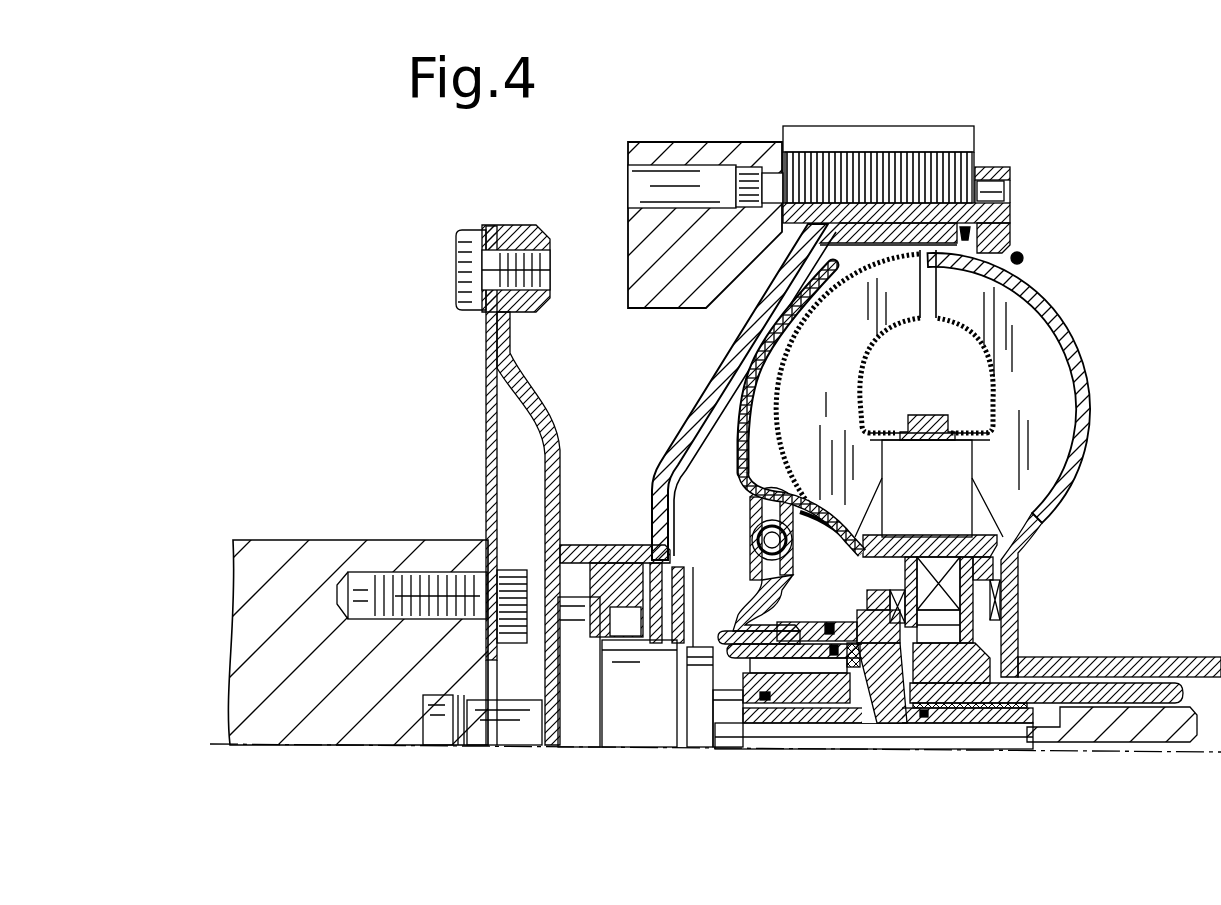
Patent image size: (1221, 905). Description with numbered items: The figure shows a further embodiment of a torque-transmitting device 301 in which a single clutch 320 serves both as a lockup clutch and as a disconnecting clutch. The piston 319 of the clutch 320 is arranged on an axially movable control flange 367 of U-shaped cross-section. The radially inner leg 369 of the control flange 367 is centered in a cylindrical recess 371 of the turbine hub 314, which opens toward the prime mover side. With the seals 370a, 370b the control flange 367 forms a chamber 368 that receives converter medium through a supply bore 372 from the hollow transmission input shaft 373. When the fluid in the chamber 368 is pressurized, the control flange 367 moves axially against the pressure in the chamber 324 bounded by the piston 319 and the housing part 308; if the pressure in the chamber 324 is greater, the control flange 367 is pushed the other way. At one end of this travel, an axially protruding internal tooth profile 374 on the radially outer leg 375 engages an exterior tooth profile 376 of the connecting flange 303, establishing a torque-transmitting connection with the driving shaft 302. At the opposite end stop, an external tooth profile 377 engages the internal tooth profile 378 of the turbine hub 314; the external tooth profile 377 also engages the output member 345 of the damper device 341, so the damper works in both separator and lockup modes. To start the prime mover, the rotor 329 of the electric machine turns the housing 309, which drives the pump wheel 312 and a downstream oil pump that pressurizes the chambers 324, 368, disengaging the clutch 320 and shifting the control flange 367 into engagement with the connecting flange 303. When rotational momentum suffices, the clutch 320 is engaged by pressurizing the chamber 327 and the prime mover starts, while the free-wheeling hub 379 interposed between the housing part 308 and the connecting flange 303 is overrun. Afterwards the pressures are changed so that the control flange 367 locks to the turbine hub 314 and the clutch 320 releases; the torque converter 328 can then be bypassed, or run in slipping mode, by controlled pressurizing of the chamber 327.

The torque-transmitting device 301 is at (1100, 110).
The driving shaft 302 is at (285, 745).
The connecting flange 303 is at (632, 696).
The housing part 308 is at (692, 408).
The housing 309 is at (1035, 295).
The pump wheel 312 is at (1030, 347).
The turbine hub 314 is at (920, 744).
The piston 319 is at (738, 442).
The clutch 320 is at (724, 384).
The chamber 324 is at (710, 512).
The chamber 327 is at (770, 363).
The torque converter 328 is at (1055, 240).
The rotor 329 is at (886, 183).
The damper device 341 is at (822, 543).
The output member 345 is at (850, 550).
The control flange 367 is at (777, 744).
The chamber 368 is at (850, 744).
The radially inner leg 369 is at (812, 744).
The seal 370a is at (750, 745).
The seal 370b is at (920, 632).
The cylindrical recess 371 is at (728, 746).
The supply bore 372 is at (877, 744).
The hollow transmission input shaft 373 is at (1007, 744).
The internal tooth profile 374 is at (634, 745).
The radially outer leg 375 is at (700, 730).
The exterior tooth profile 376 is at (640, 549).
The external tooth profile 377 is at (748, 612).
The internal tooth profile 378 is at (1050, 525).
The free-wheeling hub 379 is at (455, 743).